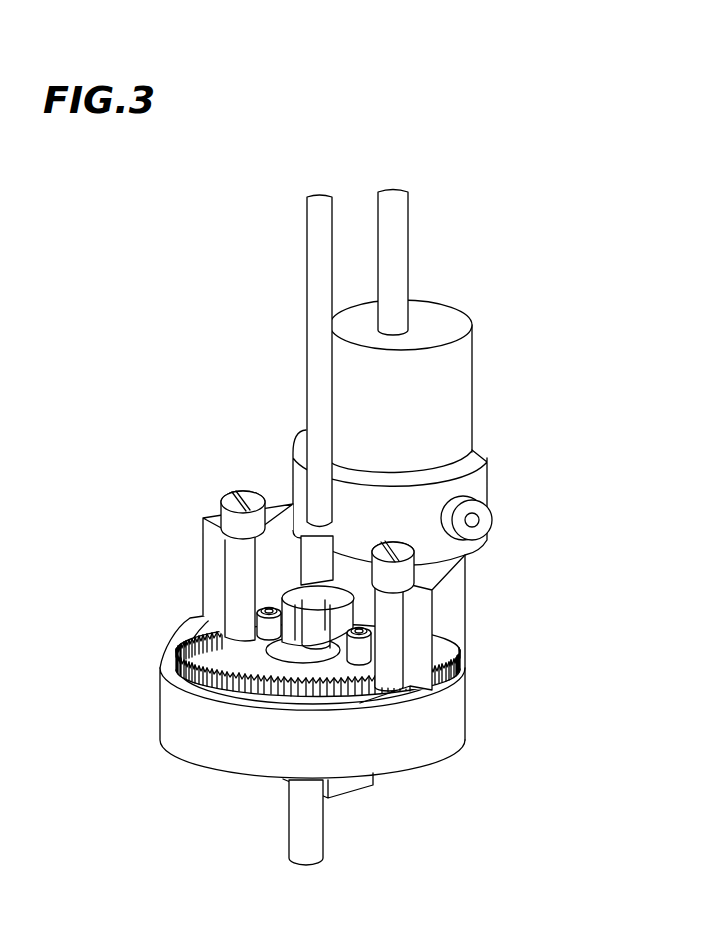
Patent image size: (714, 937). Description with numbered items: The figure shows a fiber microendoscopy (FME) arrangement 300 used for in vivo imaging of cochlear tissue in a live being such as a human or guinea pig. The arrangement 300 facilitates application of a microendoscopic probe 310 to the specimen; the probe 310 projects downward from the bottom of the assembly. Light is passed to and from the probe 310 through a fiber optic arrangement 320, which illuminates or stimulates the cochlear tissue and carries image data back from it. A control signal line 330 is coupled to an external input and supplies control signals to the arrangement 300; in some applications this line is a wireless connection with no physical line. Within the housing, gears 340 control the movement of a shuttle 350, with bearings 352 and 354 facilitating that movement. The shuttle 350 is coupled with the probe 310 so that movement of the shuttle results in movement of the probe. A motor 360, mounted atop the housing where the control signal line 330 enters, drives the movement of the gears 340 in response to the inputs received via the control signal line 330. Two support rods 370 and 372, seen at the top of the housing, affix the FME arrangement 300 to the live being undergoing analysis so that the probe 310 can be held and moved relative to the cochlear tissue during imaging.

The FME arrangement 300 is at (536, 69).
The microendoscopic probe 310 is at (303, 827).
The fiber optic arrangement 320 is at (320, 202).
The control signal line 330 is at (405, 198).
The gears 340 is at (164, 647).
The shuttle 350 is at (295, 590).
The bearing 352 is at (262, 602).
The bearing 354 is at (372, 622).
The motor 360 is at (455, 320).
The support rod 370 is at (250, 492).
The support rod 372 is at (397, 542).